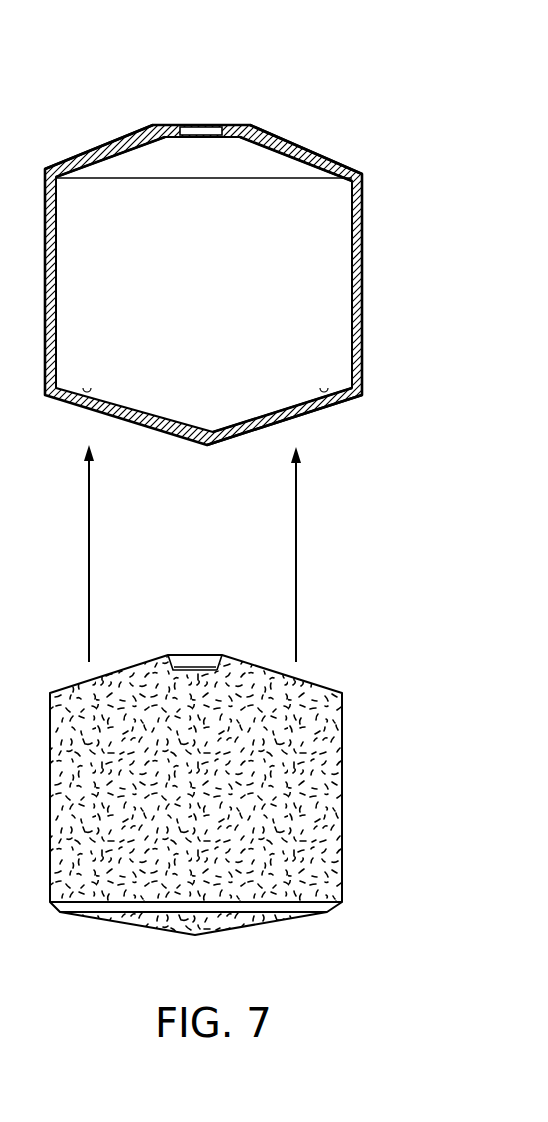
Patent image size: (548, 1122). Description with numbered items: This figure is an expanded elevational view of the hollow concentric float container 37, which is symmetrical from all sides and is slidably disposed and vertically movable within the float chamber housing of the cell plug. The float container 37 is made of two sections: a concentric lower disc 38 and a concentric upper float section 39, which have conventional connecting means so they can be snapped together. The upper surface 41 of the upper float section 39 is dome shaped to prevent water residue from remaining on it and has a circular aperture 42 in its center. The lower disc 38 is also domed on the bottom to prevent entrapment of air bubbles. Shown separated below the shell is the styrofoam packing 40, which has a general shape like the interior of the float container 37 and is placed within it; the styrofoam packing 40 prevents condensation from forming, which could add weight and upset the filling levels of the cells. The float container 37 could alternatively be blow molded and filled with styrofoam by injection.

The float container 37 is at (316, 70).
The lower disc 38 is at (304, 414).
The upper float section 39 is at (329, 160).
The styrofoam packing 40 is at (343, 783).
The upper surface 41 is at (102, 147).
The circular aperture 42 is at (202, 125).